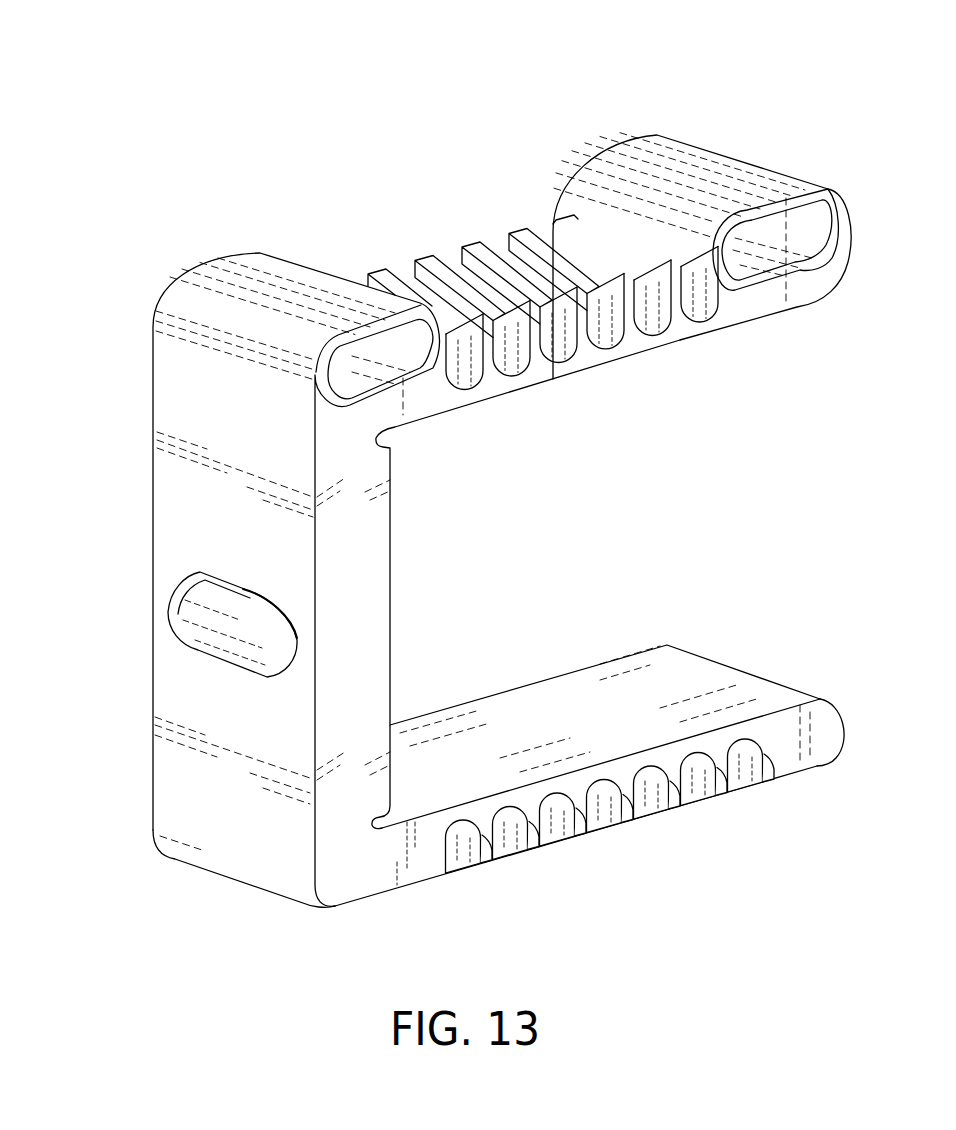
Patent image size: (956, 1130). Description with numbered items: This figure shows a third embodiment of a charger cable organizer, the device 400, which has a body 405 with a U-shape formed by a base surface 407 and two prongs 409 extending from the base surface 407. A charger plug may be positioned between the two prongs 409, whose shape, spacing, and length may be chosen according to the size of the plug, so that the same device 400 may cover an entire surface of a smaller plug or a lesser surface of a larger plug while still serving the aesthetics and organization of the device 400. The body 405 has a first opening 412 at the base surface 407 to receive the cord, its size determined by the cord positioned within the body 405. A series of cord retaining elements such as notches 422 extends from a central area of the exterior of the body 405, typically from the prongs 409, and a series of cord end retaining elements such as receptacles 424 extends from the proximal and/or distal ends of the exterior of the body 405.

The device 400 is at (256, 120).
The body 405 is at (536, 550).
The base surface 407 is at (251, 440).
The prongs 409 is at (650, 691).
The first opening 412 is at (236, 605).
The notches 422 is at (441, 244).
The receptacles 424 is at (738, 233).